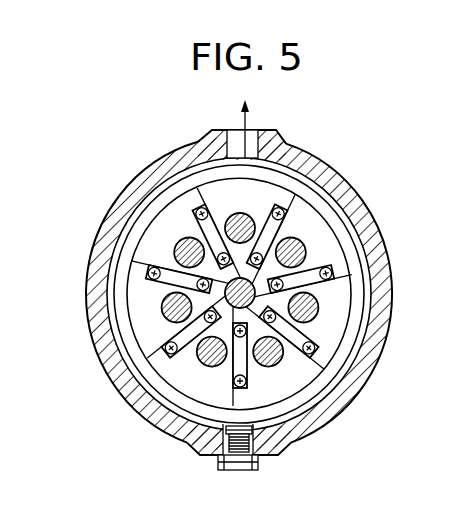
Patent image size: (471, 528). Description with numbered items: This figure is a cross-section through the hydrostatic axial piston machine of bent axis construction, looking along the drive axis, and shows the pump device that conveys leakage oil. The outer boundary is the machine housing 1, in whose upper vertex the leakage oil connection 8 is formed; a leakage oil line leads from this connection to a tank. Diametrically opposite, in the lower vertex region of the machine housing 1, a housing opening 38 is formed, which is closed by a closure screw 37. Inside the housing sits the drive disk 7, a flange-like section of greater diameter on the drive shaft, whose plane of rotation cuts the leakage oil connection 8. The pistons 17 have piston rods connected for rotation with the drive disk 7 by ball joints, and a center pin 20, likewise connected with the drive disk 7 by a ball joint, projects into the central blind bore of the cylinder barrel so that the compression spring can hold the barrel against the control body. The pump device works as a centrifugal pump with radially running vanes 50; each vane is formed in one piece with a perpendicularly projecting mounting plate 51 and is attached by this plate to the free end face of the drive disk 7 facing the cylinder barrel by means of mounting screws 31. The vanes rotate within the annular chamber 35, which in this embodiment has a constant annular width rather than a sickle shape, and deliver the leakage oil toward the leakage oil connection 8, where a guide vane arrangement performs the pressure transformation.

The machine housing 1 is at (322, 165).
The drive disk 7 is at (128, 302).
The leakage oil connection 8 is at (223, 170).
The pistons 17 is at (302, 291).
The center pin 20 is at (348, 239).
The mounting screws 31 is at (125, 268).
The annular chamber 35 is at (158, 195).
The closure screw 37 is at (236, 472).
The housing opening 38 is at (262, 440).
The vanes 50 is at (274, 296).
The mounting plate 51 is at (178, 348).